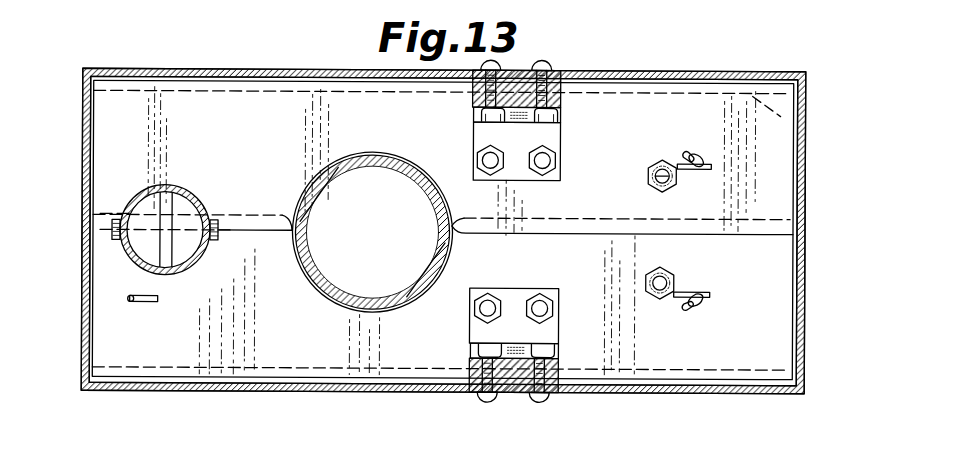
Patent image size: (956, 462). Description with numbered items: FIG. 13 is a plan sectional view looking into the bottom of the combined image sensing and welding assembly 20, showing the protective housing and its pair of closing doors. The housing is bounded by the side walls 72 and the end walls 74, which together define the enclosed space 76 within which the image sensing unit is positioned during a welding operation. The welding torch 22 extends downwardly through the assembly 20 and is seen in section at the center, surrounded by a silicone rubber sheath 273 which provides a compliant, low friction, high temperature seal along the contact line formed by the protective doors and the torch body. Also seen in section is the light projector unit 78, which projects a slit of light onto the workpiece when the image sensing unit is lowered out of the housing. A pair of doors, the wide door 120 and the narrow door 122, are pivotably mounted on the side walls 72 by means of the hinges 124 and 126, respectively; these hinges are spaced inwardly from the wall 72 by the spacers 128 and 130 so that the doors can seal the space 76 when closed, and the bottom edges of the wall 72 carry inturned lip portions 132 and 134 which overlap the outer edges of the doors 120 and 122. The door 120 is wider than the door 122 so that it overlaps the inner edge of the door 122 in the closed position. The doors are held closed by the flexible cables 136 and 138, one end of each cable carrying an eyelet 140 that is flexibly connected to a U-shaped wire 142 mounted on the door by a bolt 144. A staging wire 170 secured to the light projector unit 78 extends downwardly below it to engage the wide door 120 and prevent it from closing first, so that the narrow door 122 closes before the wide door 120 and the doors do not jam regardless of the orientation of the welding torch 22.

The combined image sensing and welding assembly 20 is at (40, 89).
The welding torch 22 is at (399, 155).
The side walls 72 is at (308, 42).
The end walls 74 is at (87, 161).
The enclosed space 76 is at (282, 301).
The light projector unit 78 is at (126, 199).
The door 120 is at (472, 231).
The door 122 is at (778, 181).
The hinge 124 is at (522, 341).
The hinge 126 is at (517, 124).
The spacer 128 is at (513, 393).
The spacer 130 is at (514, 88).
The inturned lip portion 132 is at (767, 372).
The inturned lip portion 134 is at (790, 117).
The flexible cable 136 is at (685, 151).
The flexible cable 138 is at (688, 310).
The eyelet 140 is at (697, 159).
The U-shaped wire 142 is at (711, 166).
The bolt 144 is at (648, 178).
The staging wire 170 is at (140, 304).
The silicone rubber sheath 273 is at (449, 270).